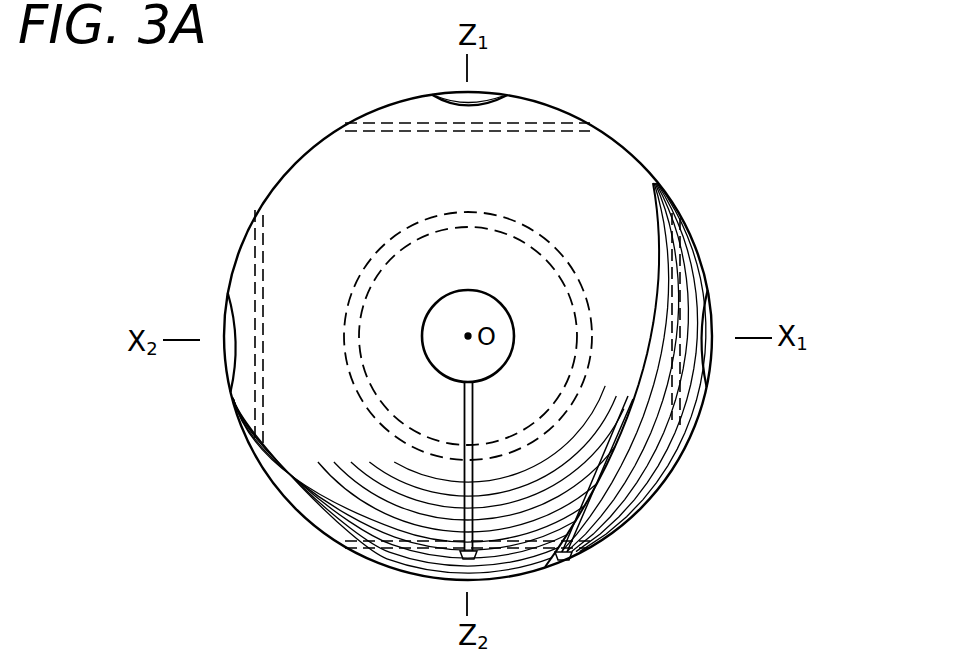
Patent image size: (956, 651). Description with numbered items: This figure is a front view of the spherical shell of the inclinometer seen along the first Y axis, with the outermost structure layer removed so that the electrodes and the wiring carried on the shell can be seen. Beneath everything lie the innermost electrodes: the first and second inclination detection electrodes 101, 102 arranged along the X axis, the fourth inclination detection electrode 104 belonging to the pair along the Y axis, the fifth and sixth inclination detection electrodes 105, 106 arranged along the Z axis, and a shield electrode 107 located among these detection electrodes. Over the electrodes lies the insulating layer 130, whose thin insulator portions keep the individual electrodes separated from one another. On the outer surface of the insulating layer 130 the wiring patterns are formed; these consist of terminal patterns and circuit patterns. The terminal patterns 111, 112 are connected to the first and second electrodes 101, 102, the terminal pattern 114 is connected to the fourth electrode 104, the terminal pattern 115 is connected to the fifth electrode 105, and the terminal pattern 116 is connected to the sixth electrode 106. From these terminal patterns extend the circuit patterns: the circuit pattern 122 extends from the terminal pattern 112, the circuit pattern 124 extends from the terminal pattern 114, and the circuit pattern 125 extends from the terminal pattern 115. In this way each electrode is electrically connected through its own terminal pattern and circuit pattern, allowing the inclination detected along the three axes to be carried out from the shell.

The insulating layer 130 is at (307, 190).
The fifth inclination detection electrode 105 is at (420, 112).
The terminal pattern 115 is at (480, 93).
The fourth inclination detection electrode 104 is at (535, 275).
The terminal pattern 111 is at (702, 318).
The terminal pattern 112 is at (232, 357).
The second inclination detection electrode 102 is at (240, 405).
The first inclination detection electrode 101 is at (700, 400).
The terminal pattern 114 is at (433, 354).
The terminal pattern 116 is at (488, 578).
The circuit pattern 125 is at (607, 467).
The circuit pattern 124 is at (550, 560).
The sixth inclination detection electrode 106 is at (418, 580).
The circuit pattern 122 is at (307, 516).
The shield electrode 107 is at (343, 548).